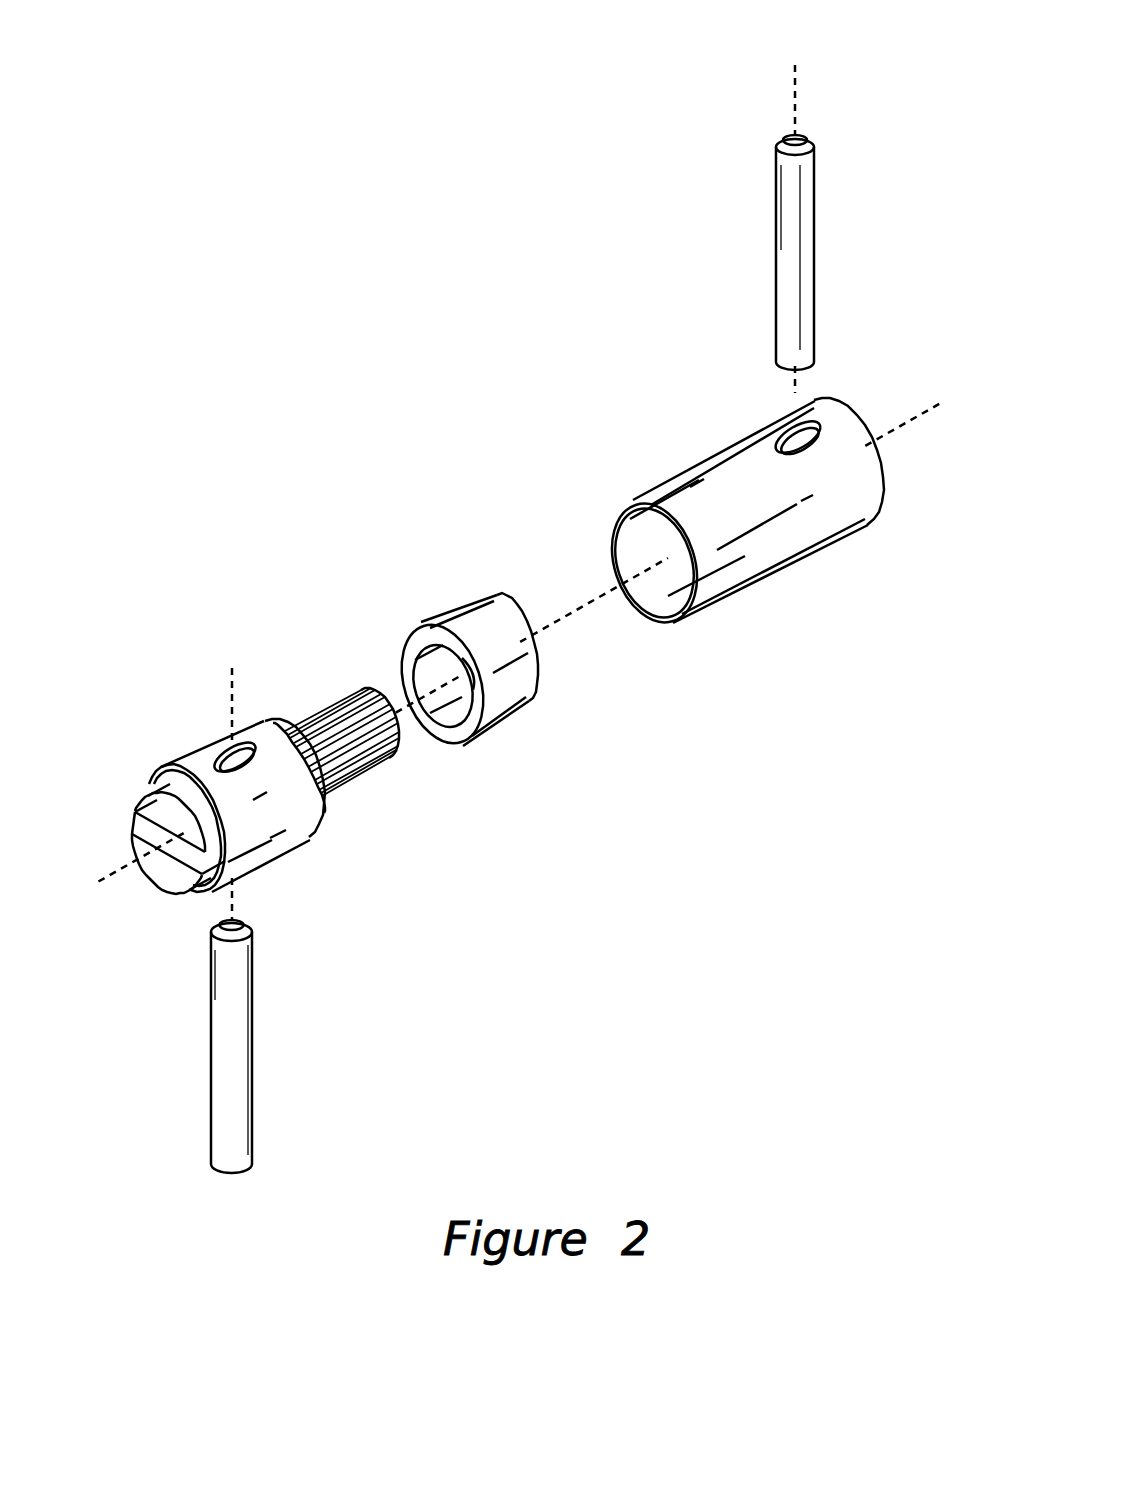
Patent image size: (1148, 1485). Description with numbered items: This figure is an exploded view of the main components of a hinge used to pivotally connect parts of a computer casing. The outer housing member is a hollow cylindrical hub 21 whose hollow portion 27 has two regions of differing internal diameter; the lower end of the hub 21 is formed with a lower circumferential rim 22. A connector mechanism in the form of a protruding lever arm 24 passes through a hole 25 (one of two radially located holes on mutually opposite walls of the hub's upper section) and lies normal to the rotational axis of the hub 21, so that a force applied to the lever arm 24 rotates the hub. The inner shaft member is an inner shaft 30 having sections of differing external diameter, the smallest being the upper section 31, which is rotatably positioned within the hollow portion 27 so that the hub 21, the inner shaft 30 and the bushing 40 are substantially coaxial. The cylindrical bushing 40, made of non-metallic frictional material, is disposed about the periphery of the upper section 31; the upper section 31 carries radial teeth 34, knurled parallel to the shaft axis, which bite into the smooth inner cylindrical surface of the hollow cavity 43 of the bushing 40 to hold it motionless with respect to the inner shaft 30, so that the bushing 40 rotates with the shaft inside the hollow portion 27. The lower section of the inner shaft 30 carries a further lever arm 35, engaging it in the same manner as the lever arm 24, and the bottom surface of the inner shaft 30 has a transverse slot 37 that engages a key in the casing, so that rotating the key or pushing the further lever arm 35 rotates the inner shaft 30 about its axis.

The hollow cylindrical hub 21 is at (667, 478).
The lower circumferential rim 22 is at (672, 628).
The lever arm 24 is at (776, 264).
The hole 25 is at (780, 435).
The hollow portion 27 is at (642, 540).
The inner shaft 30 is at (178, 724).
The upper section 31 is at (390, 756).
The radial teeth 34 is at (364, 778).
The further lever arm 35 is at (252, 970).
The transverse slot 37 is at (230, 868).
The bushing 40 is at (452, 598).
The hollow cavity 43 is at (425, 662).